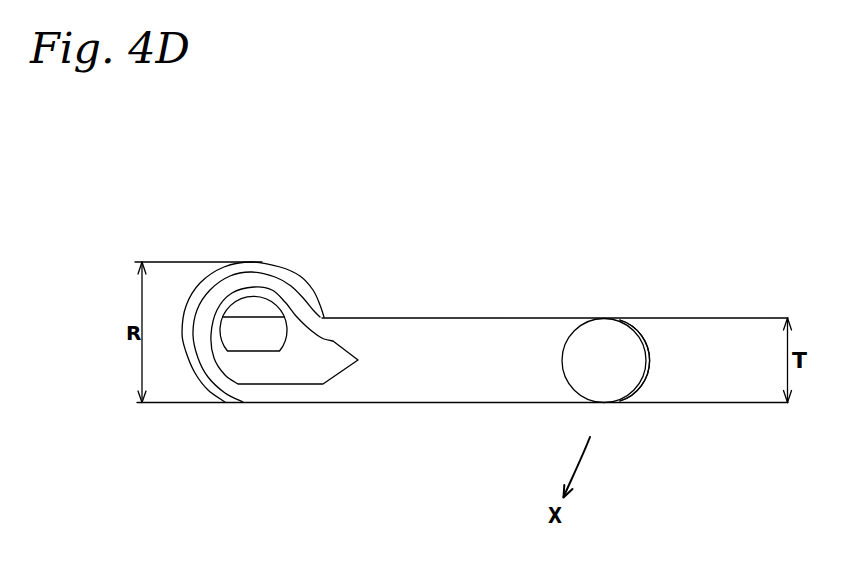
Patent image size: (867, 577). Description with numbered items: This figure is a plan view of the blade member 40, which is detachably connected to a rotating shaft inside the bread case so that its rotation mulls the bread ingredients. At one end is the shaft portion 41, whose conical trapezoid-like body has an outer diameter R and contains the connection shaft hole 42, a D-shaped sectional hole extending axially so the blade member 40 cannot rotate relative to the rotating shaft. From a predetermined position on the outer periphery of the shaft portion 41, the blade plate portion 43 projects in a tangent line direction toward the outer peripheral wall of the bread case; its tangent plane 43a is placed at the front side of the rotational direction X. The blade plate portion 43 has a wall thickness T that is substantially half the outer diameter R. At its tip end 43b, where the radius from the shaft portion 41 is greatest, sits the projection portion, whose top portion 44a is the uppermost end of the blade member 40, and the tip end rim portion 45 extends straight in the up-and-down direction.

The blade member 40 is at (572, 225).
The shaft portion 41 is at (273, 285).
The connection shaft hole 42 is at (258, 337).
The blade plate portion 43 is at (462, 375).
The tangent plane 43a is at (448, 402).
The tip end 43b is at (635, 360).
The top portion 44a is at (602, 355).
The tip end rim portion 45 is at (649, 362).